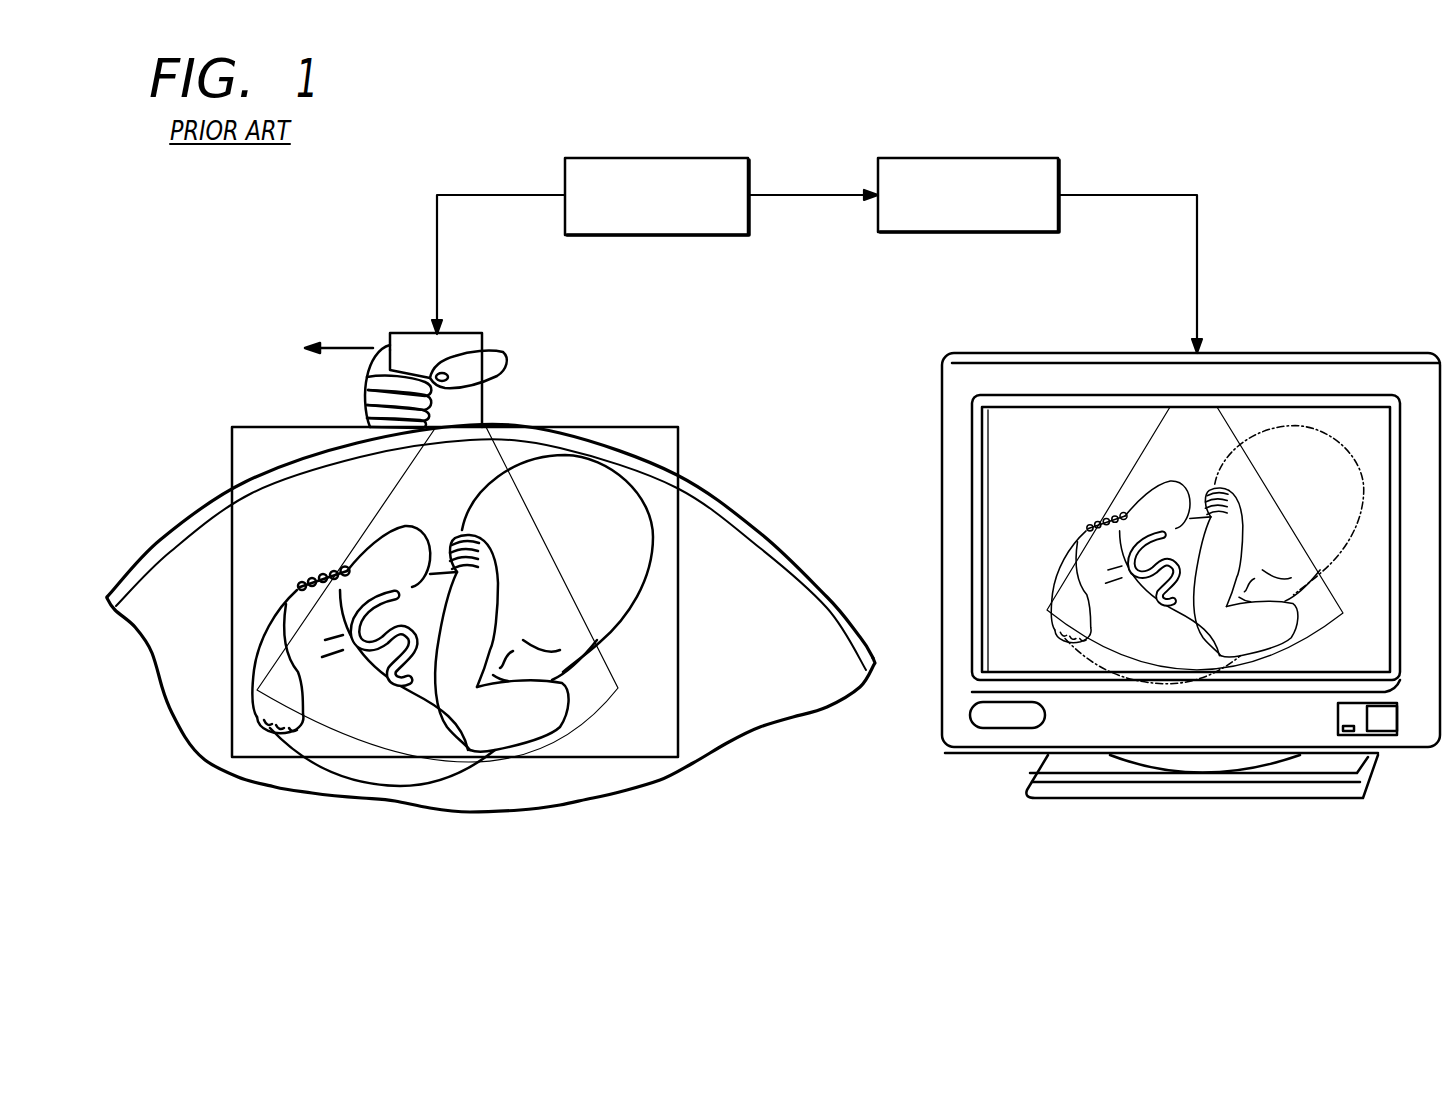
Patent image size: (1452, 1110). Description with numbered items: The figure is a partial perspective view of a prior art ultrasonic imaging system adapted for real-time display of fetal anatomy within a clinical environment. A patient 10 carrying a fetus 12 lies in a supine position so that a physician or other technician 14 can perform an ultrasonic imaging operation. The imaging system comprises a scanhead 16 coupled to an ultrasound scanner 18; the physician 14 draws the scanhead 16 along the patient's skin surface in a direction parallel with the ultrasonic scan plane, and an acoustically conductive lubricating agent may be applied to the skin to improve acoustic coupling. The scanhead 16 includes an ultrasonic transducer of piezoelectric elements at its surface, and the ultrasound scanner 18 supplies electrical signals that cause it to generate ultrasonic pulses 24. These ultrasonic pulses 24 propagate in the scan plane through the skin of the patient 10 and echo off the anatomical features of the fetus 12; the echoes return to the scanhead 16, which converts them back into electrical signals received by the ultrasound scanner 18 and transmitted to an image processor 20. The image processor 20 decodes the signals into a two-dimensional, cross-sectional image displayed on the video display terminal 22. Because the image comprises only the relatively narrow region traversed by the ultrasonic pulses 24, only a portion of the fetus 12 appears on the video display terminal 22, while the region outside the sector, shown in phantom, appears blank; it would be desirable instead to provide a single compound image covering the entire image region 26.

The patient 10 is at (197, 512).
The fetus 12 is at (385, 728).
The physician or other technician 14 is at (365, 392).
The scanhead 16 is at (463, 333).
The ultrasound scanner 18 is at (656, 158).
The image processor 20 is at (966, 158).
The video display terminal 22 is at (1298, 352).
The ultrasonic pulses 24 is at (594, 708).
The entire image region 26 is at (680, 713).